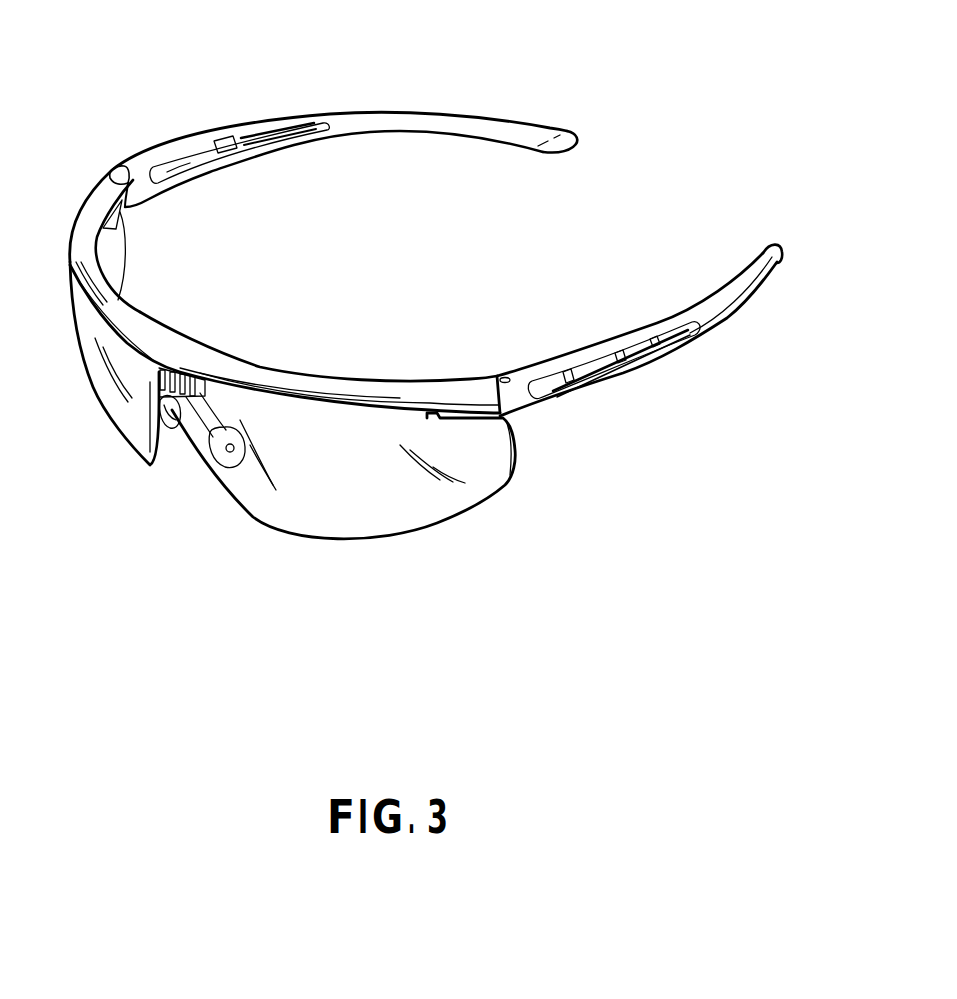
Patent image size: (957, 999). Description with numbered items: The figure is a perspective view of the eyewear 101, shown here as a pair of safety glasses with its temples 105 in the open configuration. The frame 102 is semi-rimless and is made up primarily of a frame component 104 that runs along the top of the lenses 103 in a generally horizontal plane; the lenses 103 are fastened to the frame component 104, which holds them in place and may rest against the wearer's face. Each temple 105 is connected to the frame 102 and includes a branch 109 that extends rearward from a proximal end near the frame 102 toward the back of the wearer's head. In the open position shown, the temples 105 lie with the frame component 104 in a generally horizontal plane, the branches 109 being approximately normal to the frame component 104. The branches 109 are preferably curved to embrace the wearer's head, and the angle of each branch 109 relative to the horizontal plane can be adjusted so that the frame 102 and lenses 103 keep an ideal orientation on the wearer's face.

The eyewear 101 is at (536, 69).
The frame 102 is at (400, 395).
The lenses 103 is at (316, 515).
The frame component 104 is at (87, 250).
The temples 105 is at (771, 243).
The branch 109 is at (423, 122).